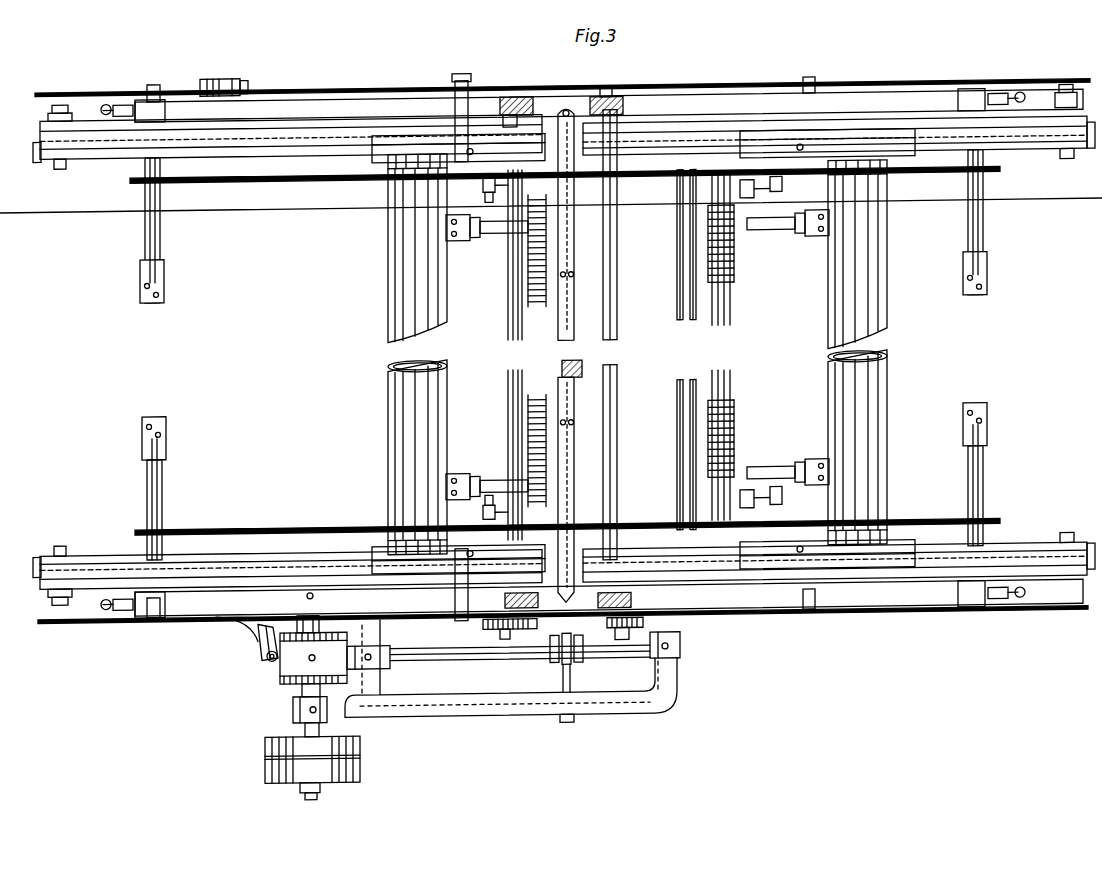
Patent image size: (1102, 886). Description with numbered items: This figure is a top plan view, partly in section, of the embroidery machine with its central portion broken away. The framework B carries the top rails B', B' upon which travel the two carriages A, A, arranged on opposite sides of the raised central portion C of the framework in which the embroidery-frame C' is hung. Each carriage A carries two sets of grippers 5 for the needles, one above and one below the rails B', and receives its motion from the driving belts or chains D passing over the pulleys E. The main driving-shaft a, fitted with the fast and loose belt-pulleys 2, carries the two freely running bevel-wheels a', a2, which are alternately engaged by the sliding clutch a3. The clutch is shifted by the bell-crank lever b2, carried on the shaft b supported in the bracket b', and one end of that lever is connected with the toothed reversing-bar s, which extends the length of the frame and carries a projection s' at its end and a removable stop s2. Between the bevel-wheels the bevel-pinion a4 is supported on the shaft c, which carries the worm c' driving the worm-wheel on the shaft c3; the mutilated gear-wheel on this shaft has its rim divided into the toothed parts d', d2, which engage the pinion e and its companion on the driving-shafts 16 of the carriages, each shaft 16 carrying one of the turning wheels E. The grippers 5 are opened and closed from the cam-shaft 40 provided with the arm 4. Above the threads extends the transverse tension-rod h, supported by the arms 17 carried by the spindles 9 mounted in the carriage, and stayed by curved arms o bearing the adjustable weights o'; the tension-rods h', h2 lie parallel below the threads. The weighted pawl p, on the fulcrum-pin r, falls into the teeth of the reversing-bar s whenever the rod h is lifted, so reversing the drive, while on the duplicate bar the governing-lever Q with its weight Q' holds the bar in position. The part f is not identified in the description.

The carriage A is at (470, 150).
The framework B is at (558, 354).
The top rail B' is at (686, 351).
The raised central portion of framework C is at (568, 355).
The embroidery-frame C' is at (601, 355).
The driving belt or chain D is at (112, 167).
The pulley E is at (30, 168).
The governing-lever Q is at (220, 79).
The weight Q' is at (261, 82).
The reversing-bar s is at (562, 359).
The projection s' is at (556, 635).
The removable stop s2 is at (742, 626).
The pawl p is at (633, 361).
The fulcrum-pin r is at (462, 75).
The arm 4 is at (782, 204).
The gripper 5 is at (548, 265).
The shaft or spindle 9 is at (750, 545).
The driving-shaft of carriage 16 is at (508, 348).
The arm 17 is at (720, 188).
The cam-shaft 40 is at (735, 328).
The curved arm o is at (666, 262).
The adjustable weight o' is at (768, 269).
The upper tension-rod h is at (683, 350).
The tension-rod h' is at (660, 305).
The tension-rod h2 is at (700, 335).
The main driving-shaft a is at (322, 798).
The bevel-wheel a' is at (291, 711).
The bevel-wheel a2 is at (325, 650).
The sliding clutch a3 is at (296, 675).
The bevel-pinion a4 is at (350, 685).
The fast and loose belt-pulleys 2 is at (323, 760).
The shaft b is at (240, 667).
The bracket b' is at (236, 642).
The clutch-shifting lever b2 is at (266, 662).
The shaft c is at (535, 662).
The worm c' is at (556, 665).
The shaft c3 is at (566, 733).
The rim part of mutilated gear-wheel d' is at (656, 629).
The rim part of mutilated gear-wheel d2 is at (480, 640).
The pinion e is at (502, 650).
The frame f is at (666, 698).